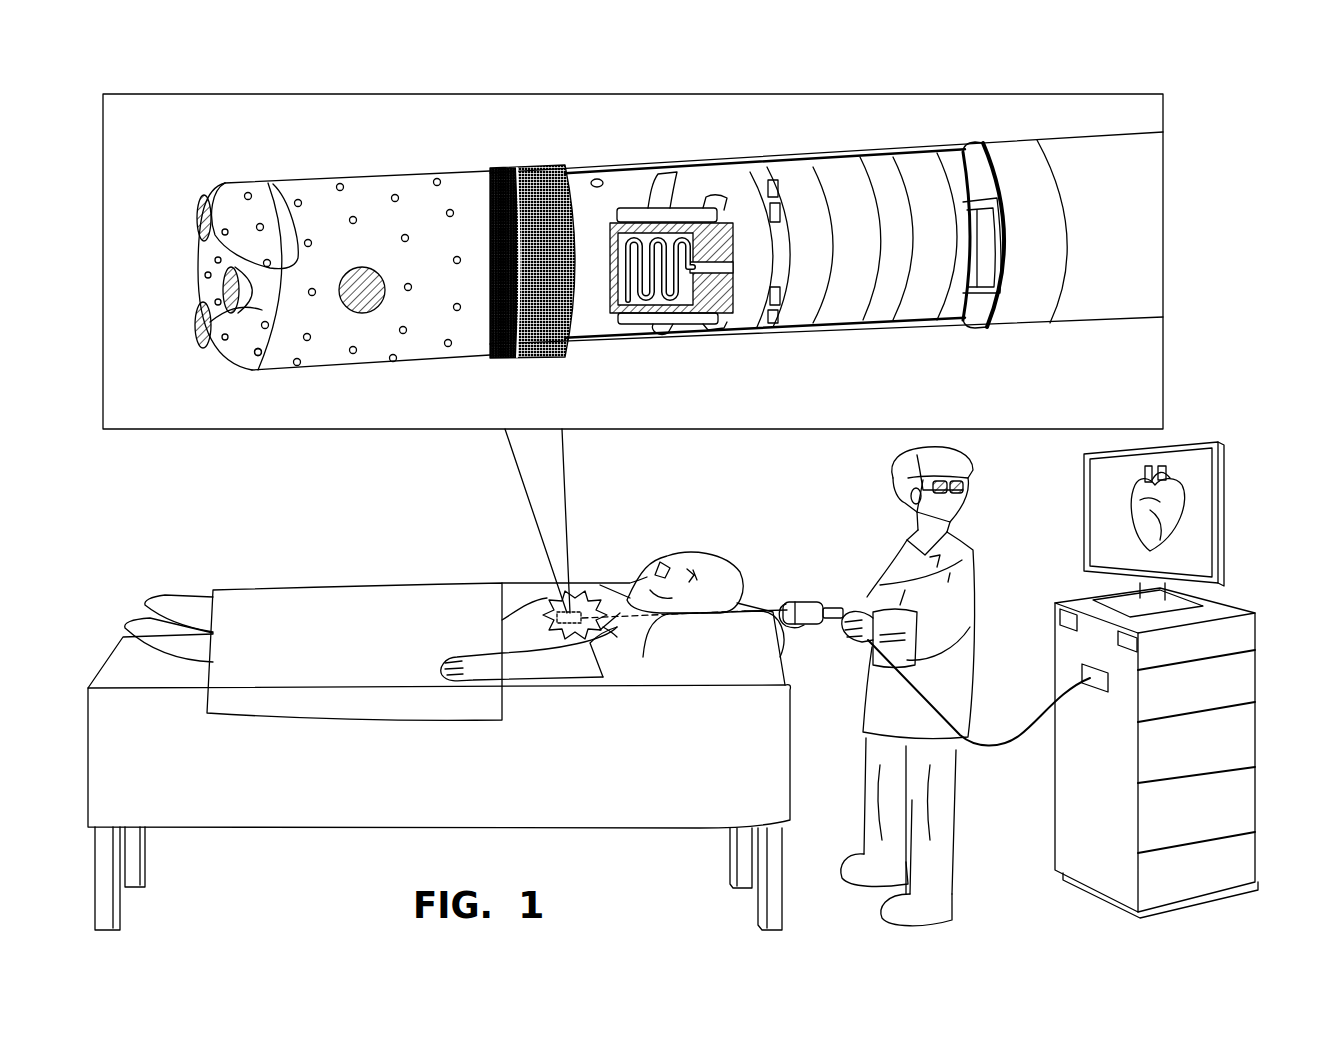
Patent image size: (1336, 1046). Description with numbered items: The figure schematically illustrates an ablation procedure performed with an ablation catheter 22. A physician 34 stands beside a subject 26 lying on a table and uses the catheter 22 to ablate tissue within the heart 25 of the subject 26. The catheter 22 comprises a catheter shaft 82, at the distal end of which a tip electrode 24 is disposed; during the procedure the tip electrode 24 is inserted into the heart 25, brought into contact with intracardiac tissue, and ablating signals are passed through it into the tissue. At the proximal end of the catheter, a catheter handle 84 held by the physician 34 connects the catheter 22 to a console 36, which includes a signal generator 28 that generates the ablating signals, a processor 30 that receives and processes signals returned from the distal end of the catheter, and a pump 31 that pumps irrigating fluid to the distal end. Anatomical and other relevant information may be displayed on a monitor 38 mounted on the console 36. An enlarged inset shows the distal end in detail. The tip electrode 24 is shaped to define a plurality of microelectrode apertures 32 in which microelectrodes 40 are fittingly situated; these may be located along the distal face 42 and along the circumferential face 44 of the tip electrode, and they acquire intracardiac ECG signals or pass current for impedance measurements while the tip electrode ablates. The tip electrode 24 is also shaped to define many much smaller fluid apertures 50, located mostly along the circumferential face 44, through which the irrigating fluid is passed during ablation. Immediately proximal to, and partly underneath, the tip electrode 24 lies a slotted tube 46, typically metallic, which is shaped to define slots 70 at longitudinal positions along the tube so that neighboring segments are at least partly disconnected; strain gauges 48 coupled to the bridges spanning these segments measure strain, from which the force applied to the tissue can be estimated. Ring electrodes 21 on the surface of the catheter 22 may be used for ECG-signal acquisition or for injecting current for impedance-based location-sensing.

The ring electrode 21 is at (524, 357).
The ablation catheter 22 is at (1128, 108).
The tip electrode 24 is at (376, 179).
The heart 25 is at (512, 622).
The subject 26 is at (716, 556).
The signal generator 28 is at (1258, 674).
The processor 30 is at (1258, 739).
The pump 31 is at (1258, 801).
The microelectrode apertures 32 is at (284, 255).
The physician 34 is at (965, 544).
The console 36 is at (1226, 600).
The monitor 38 is at (1219, 486).
The microelectrodes 40 is at (200, 290).
The distal face 42 is at (200, 265).
The circumferential face 44 is at (448, 189).
The slotted tube 46 is at (735, 176).
The strain gauge 48 is at (702, 210).
The fluid apertures 50 is at (258, 353).
The slots 70 is at (660, 173).
The catheter shaft 82 is at (1068, 142).
The catheter handle 84 is at (818, 625).